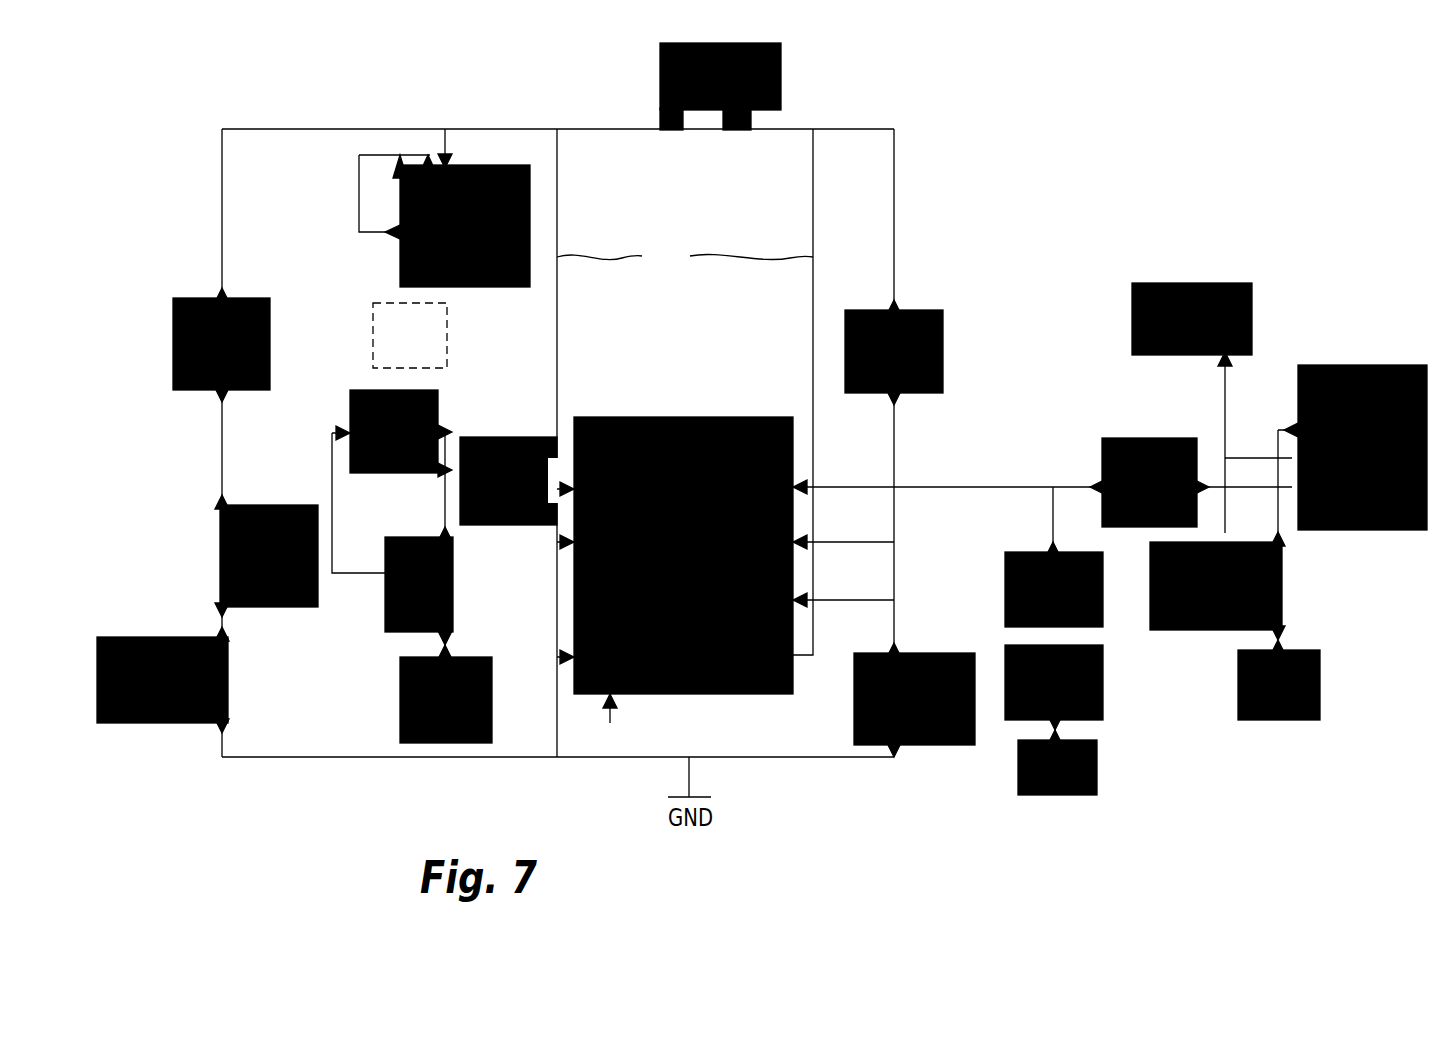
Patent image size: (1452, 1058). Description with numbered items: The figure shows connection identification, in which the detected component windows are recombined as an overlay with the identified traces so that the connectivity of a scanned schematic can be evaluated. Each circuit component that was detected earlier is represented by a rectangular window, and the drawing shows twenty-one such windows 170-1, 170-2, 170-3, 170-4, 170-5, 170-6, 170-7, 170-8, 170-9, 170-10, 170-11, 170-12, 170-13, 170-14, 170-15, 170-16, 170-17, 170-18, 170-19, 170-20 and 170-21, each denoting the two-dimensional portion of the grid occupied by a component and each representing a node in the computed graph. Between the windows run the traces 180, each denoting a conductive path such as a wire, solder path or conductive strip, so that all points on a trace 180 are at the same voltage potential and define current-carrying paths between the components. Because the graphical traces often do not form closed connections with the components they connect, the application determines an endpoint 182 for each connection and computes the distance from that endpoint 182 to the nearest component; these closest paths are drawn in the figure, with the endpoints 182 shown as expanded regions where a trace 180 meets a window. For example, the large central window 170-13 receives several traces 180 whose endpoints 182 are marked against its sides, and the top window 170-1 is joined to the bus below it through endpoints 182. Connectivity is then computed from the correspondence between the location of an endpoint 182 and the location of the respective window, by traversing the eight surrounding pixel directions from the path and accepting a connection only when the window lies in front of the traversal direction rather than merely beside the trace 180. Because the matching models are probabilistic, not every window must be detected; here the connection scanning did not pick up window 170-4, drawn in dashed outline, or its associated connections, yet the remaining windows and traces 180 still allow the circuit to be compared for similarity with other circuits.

The window 170-1 is at (782, 73).
The window 170-2 is at (500, 287).
The window 170-3 is at (200, 298).
The window 170-4 is at (410, 335).
The window 170-5 is at (920, 307).
The window 170-6 is at (1165, 283).
The window 170-7 is at (367, 390).
The window 170-8 is at (493, 437).
The window 170-9 is at (1133, 438).
The window 170-10 is at (1335, 365).
The window 170-11 is at (220, 537).
The window 170-12 is at (385, 602).
The window 170-13 is at (668, 417).
The window 170-14 is at (1005, 578).
The window 170-15 is at (1282, 585).
The window 170-16 is at (137, 637).
The window 170-17 is at (400, 690).
The window 170-18 is at (945, 747).
The window 170-19 is at (1103, 677).
The window 170-20 is at (1320, 672).
The window 170-21 is at (1097, 765).
The trace 180 is at (603, 132).
The endpoint 182 is at (222, 298).